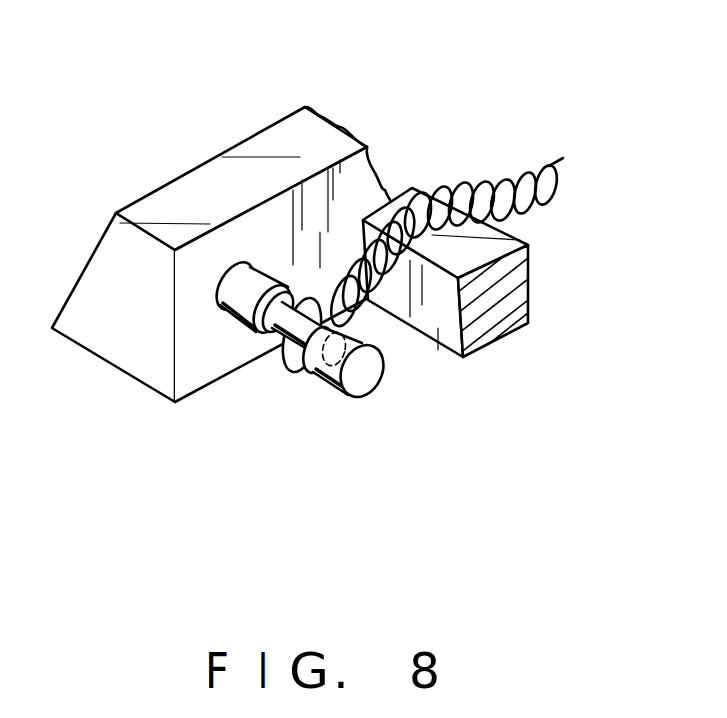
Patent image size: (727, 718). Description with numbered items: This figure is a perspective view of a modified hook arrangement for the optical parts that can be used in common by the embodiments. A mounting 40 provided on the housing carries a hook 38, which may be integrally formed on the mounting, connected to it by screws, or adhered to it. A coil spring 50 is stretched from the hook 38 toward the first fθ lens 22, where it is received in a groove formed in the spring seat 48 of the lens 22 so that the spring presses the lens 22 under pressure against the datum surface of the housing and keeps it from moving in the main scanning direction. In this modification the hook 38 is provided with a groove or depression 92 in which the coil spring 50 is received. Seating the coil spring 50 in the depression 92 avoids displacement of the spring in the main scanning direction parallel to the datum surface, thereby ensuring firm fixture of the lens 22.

The mounting 40 is at (284, 138).
The coil spring 50 is at (458, 177).
The spring seat 48 is at (508, 250).
The first fθ lens 22 is at (479, 292).
The groove or depression 92 is at (303, 362).
The hook 38 is at (313, 376).